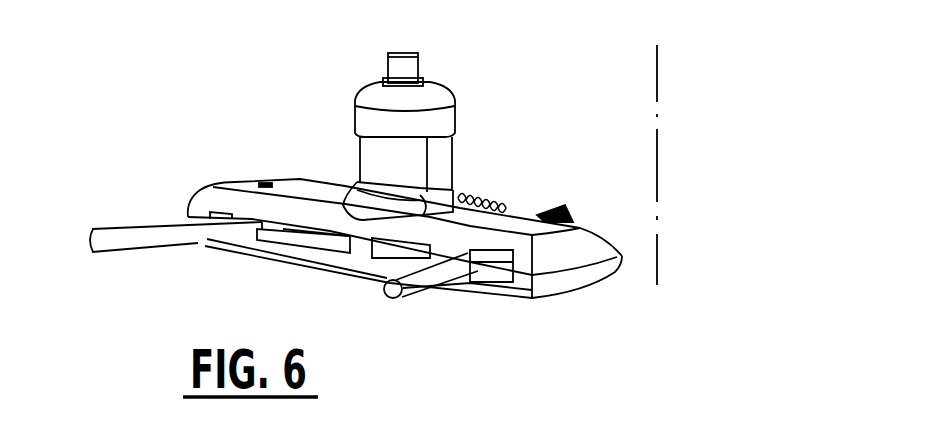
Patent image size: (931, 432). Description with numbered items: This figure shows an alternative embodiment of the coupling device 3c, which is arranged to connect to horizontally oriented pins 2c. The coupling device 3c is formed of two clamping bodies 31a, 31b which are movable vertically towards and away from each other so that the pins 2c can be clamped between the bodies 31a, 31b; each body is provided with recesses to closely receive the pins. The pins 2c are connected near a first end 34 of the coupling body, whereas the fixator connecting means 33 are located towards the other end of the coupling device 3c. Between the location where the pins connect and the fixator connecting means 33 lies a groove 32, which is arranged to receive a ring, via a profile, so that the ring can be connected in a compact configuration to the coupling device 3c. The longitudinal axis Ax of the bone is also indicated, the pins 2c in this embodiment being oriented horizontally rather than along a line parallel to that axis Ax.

The pins 2c is at (122, 242).
The coupling device 3c is at (301, 133).
The clamping body 31a is at (545, 283).
The clamping body 31b is at (565, 246).
The groove 32 is at (397, 162).
The fixator connecting means 33 is at (402, 77).
The first end 34 is at (479, 287).
The longitudinal axis Ax is at (660, 202).